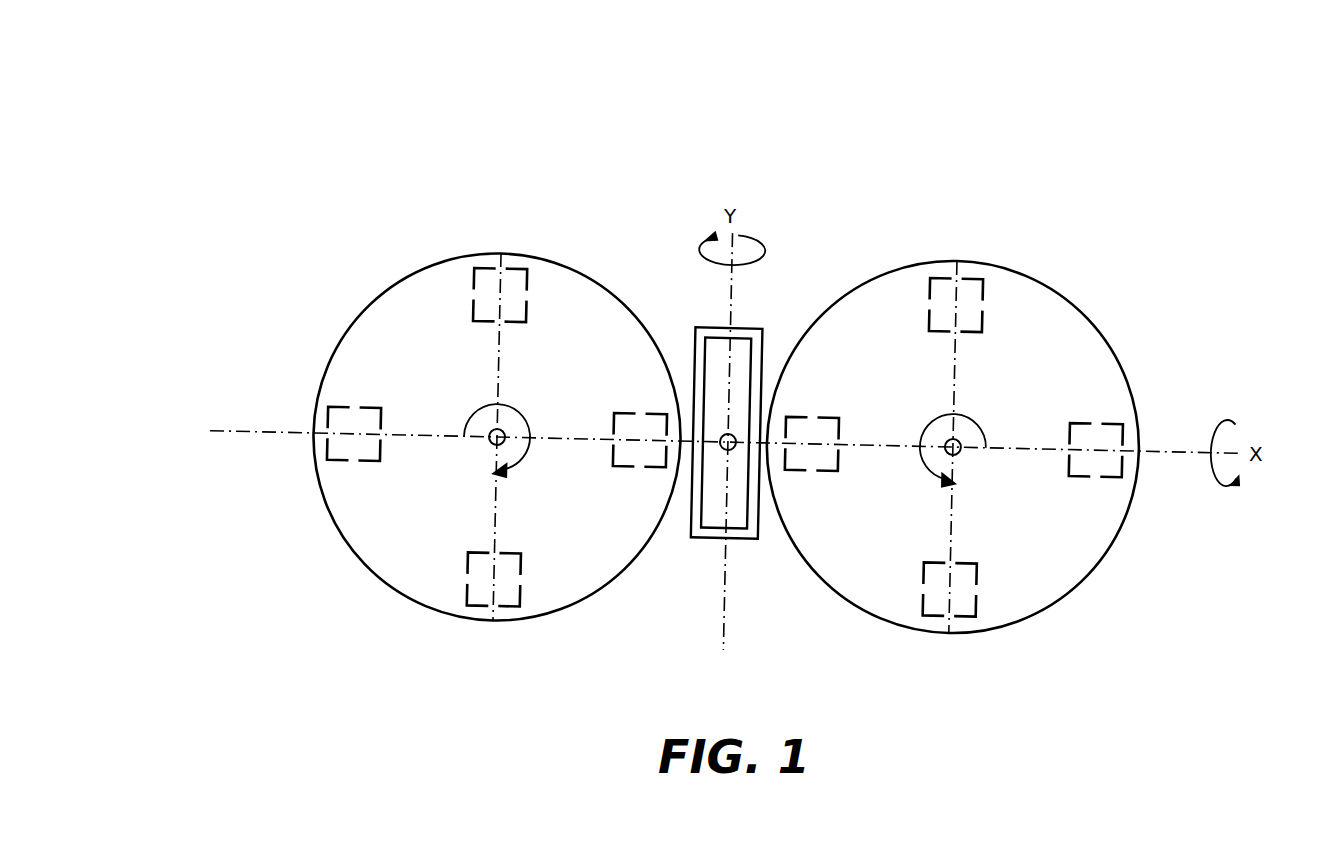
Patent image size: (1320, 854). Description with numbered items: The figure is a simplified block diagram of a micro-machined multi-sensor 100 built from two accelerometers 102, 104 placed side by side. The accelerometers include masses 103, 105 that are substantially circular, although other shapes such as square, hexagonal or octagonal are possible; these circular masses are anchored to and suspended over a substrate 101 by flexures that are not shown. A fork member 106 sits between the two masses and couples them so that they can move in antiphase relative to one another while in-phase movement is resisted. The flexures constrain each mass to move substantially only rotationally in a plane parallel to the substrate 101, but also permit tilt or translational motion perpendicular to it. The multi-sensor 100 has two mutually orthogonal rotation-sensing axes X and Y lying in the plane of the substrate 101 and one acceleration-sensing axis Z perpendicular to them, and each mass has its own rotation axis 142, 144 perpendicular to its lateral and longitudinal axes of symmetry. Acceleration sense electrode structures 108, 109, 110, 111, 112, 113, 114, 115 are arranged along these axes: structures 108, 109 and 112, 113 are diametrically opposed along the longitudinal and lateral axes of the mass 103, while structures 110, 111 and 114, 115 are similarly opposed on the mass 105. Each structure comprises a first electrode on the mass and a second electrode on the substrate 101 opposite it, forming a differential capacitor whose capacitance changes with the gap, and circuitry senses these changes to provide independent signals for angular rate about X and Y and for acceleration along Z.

The micro-machined multi-sensor 100 is at (272, 134).
The substrate 101 is at (1226, 557).
The accelerometer 102 is at (409, 263).
The mass 103 is at (598, 594).
The accelerometer 104 is at (877, 273).
The mass 105 is at (1060, 606).
The fork member 106 is at (712, 326).
The acceleration sense electrode structure 108 is at (474, 295).
The acceleration sense electrode structure 109 is at (518, 580).
The acceleration sense electrode structure 110 is at (935, 303).
The acceleration sense electrode structure 111 is at (985, 592).
The acceleration sense electrode structure 112 is at (357, 410).
The acceleration sense electrode structure 113 is at (640, 412).
The acceleration sense electrode structure 114 is at (815, 412).
The acceleration sense electrode structure 115 is at (1096, 428).
The rotation axis 142 is at (489, 446).
The rotation axis 144 is at (965, 455).